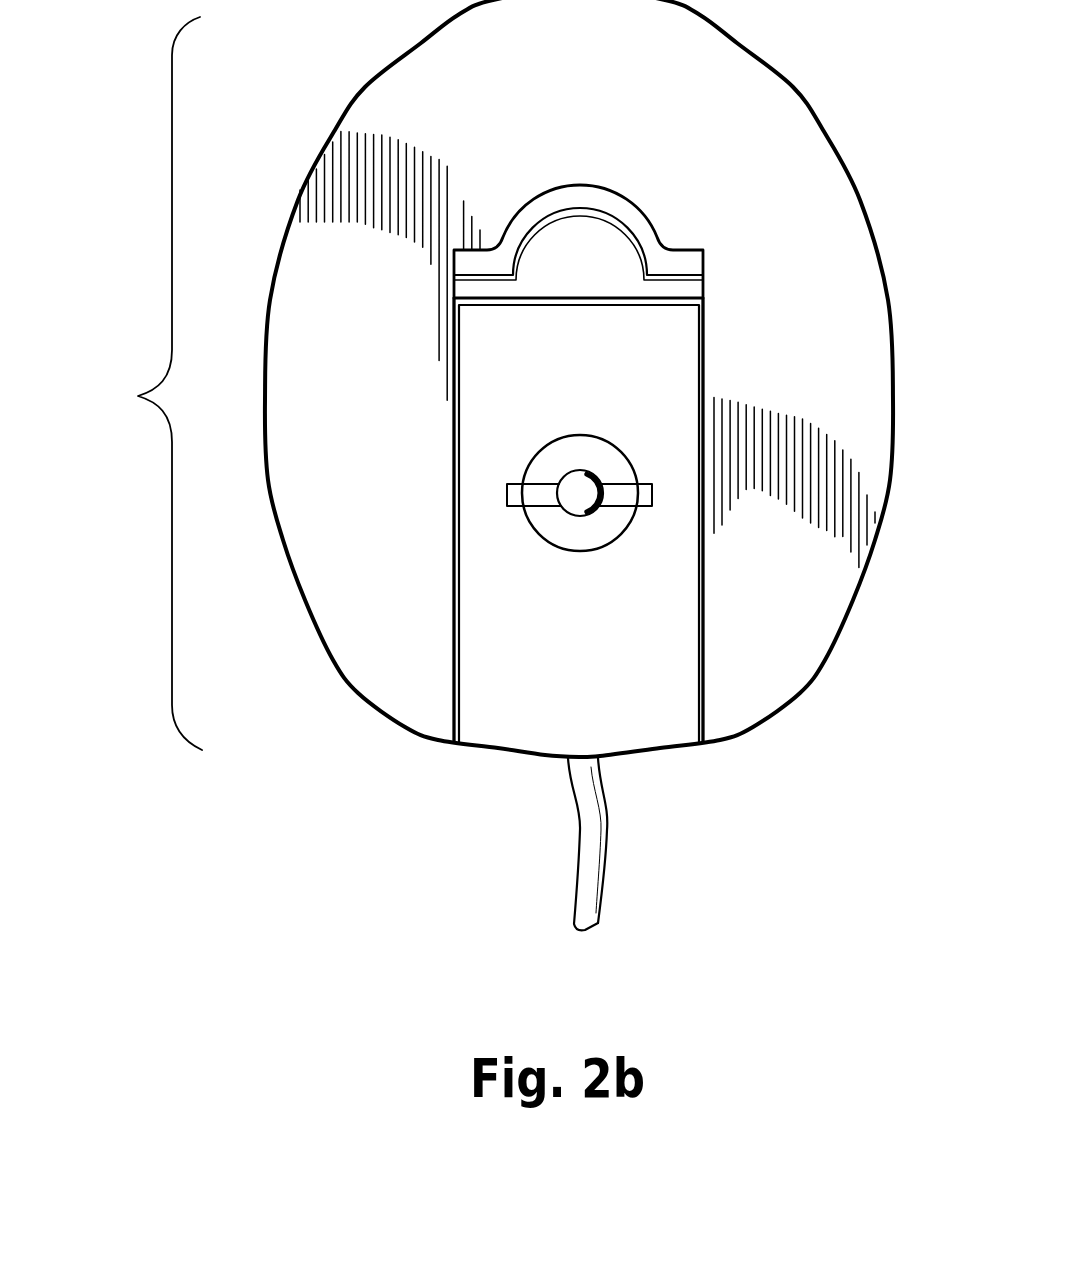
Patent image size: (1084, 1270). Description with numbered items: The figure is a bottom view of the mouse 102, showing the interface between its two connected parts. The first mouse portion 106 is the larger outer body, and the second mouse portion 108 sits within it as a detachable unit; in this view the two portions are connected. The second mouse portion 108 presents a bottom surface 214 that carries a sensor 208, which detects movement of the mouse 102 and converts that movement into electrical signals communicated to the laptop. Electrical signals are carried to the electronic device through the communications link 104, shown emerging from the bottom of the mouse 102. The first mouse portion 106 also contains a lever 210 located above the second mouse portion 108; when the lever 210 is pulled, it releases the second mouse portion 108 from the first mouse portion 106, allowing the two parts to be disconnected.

The mouse 102 is at (140, 383).
The communications link 104 is at (610, 827).
The first mouse portion 106 is at (833, 60).
The second mouse portion 108 is at (605, 698).
The sensor 208 is at (580, 552).
The lever 210 is at (594, 207).
The bottom surface 214 is at (586, 383).